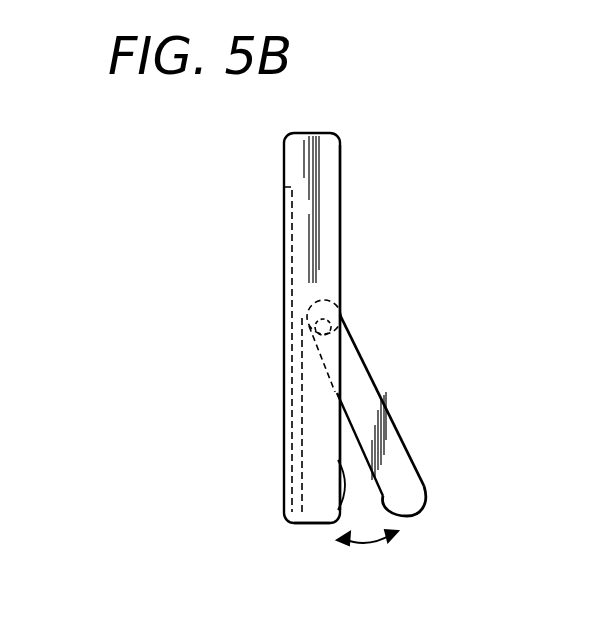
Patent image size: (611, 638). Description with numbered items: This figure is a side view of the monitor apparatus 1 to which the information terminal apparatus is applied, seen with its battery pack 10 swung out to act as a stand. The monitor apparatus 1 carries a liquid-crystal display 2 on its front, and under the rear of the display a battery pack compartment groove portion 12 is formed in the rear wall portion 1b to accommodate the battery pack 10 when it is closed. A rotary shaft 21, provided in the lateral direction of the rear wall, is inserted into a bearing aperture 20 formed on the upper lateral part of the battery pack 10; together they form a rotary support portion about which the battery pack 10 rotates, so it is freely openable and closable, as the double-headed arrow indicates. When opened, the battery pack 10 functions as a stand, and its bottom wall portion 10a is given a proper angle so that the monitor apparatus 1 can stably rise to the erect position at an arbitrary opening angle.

The monitor apparatus 1 is at (313, 134).
The rear wall portion 1b is at (329, 187).
The liquid-crystal display 2 is at (284, 212).
The bearing aperture 20 is at (339, 312).
The rotary shaft 21 is at (312, 309).
The battery pack 10 is at (393, 462).
The bottom wall portion 10a is at (412, 513).
The battery pack compartment groove portion 12 is at (329, 522).